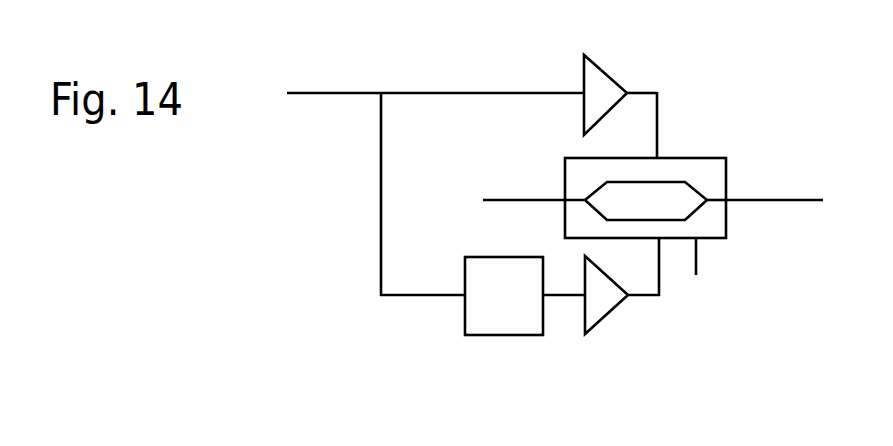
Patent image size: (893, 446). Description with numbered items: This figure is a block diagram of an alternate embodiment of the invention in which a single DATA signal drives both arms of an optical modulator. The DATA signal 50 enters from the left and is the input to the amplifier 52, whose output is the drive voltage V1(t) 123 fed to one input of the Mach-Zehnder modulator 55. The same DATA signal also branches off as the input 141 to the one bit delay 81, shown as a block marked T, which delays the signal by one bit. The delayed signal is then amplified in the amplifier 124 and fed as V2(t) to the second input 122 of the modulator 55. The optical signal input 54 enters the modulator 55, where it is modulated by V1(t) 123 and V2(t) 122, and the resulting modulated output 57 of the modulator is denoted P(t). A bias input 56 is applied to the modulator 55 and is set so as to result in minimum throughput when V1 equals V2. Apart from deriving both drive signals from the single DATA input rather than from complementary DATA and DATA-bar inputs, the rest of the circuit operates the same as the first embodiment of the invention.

The DATA input 50 is at (333, 97).
The input to the one-bit delay 141 is at (380, 262).
The amplifier 52 is at (615, 85).
The V1(t) input 123 is at (663, 150).
The Mach-Zehnder modulator 55 is at (625, 187).
The optical signal input 54 is at (507, 200).
The modulated output 57 is at (775, 225).
The one bit delay 81 is at (520, 261).
The amplifier 124 is at (593, 303).
The second input 122 is at (640, 300).
The bias input 56 is at (738, 277).